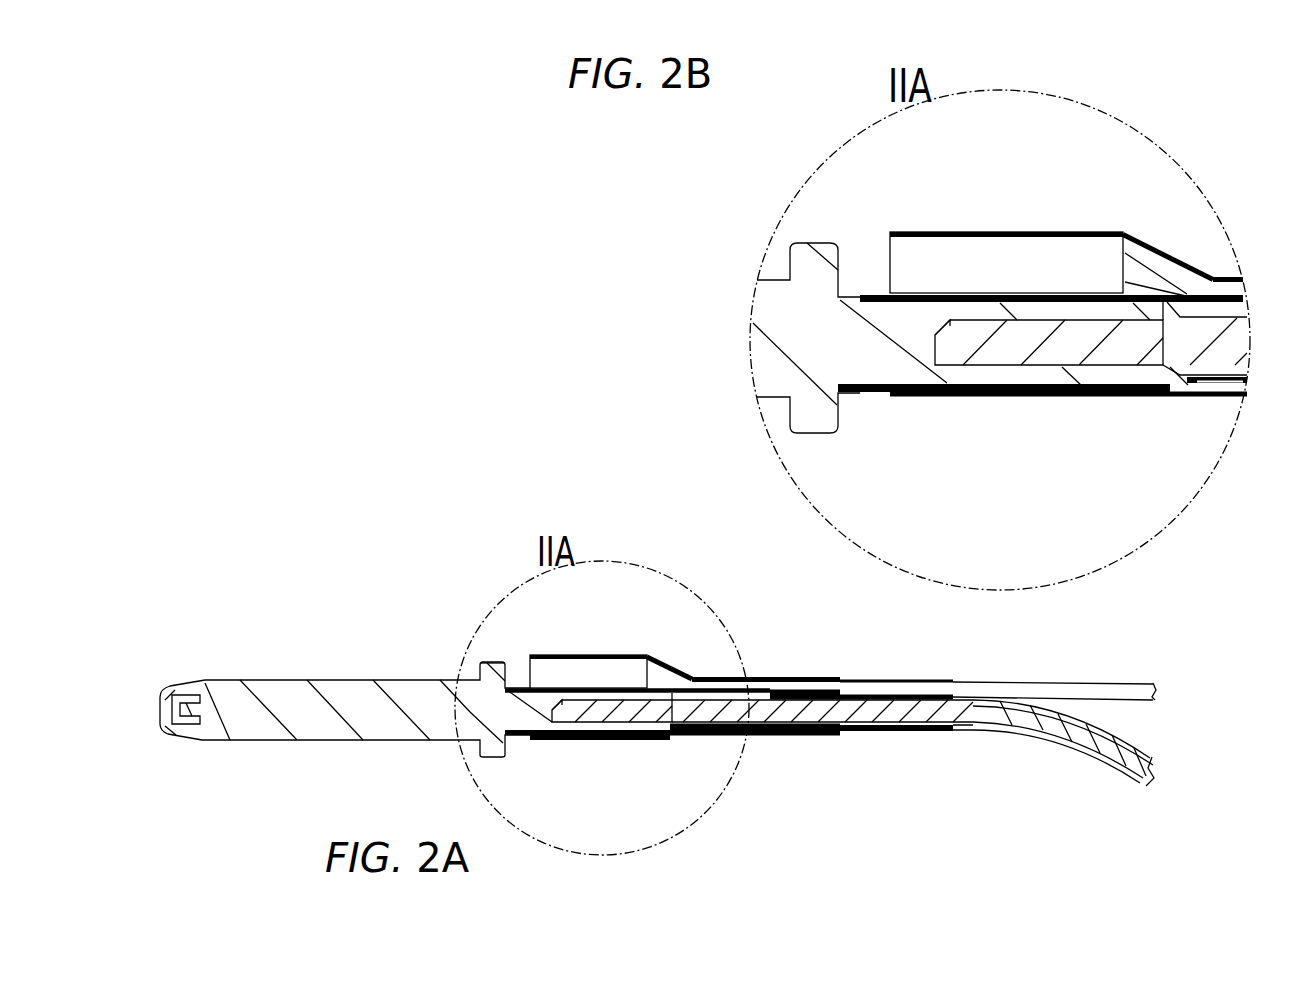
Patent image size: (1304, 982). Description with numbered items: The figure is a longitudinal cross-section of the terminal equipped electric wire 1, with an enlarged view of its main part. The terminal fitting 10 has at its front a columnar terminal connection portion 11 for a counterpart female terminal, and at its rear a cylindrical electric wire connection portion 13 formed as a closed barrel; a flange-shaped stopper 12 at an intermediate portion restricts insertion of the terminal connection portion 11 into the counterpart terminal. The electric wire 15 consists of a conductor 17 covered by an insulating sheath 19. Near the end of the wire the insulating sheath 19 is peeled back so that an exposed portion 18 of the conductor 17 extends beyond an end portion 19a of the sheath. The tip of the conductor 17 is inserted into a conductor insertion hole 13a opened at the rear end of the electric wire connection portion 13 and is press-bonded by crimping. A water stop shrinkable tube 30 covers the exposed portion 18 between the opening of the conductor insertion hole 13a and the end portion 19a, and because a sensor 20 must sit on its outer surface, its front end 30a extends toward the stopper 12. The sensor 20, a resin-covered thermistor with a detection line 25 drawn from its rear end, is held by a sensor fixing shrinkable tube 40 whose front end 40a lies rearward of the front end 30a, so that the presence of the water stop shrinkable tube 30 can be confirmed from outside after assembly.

In FIG. 2A, the terminal equipped electric wire 1 is at (455, 562).
In FIG. 2A, the terminal fitting 10 is at (344, 668).
In FIG. 2B, the terminal fitting 10 is at (772, 268).
In FIG. 2A, the terminal connection portion 11 is at (273, 733).
In FIG. 2A, the stopper 12 is at (488, 664).
In FIG. 2A, the electric wire connection portion 13 is at (633, 727).
In FIG. 2B, the electric wire connection portion 13 is at (1092, 380).
In FIG. 2A, the conductor insertion hole 13a is at (597, 720).
In FIG. 2B, the conductor insertion hole 13a is at (1065, 342).
In FIG. 2A, the electric wire 15 is at (1062, 770).
In FIG. 2A, the conductor 17 is at (1000, 725).
In FIG. 2B, the conductor 17 is at (990, 350).
In FIG. 2B, the exposed portion 18 is at (1172, 400).
In FIG. 2A, the insulating sheath 19 is at (1108, 777).
In FIG. 2B, the insulating sheath 19 is at (1216, 386).
In FIG. 2B, the end portion of the insulating sheath 19a is at (1182, 398).
In FIG. 2A, the sensor 20 is at (570, 660).
In FIG. 2B, the sensor 20 is at (947, 262).
In FIG. 2A, the detection line 25 is at (1052, 672).
In FIG. 2B, the detection line 25 is at (1212, 264).
In FIG. 2A, the water stop shrinkable tube 30 is at (523, 748).
In FIG. 2B, the water stop shrinkable tube 30 is at (1165, 282).
In FIG. 2B, the front end of the water stop shrinkable tube 30a is at (857, 390).
In FIG. 2A, the sensor fixing shrinkable tube 40 is at (661, 652).
In FIG. 2B, the sensor fixing shrinkable tube 40 is at (1158, 238).
In FIG. 2B, the front end of the sensor fixing shrinkable tube 40a is at (888, 400).